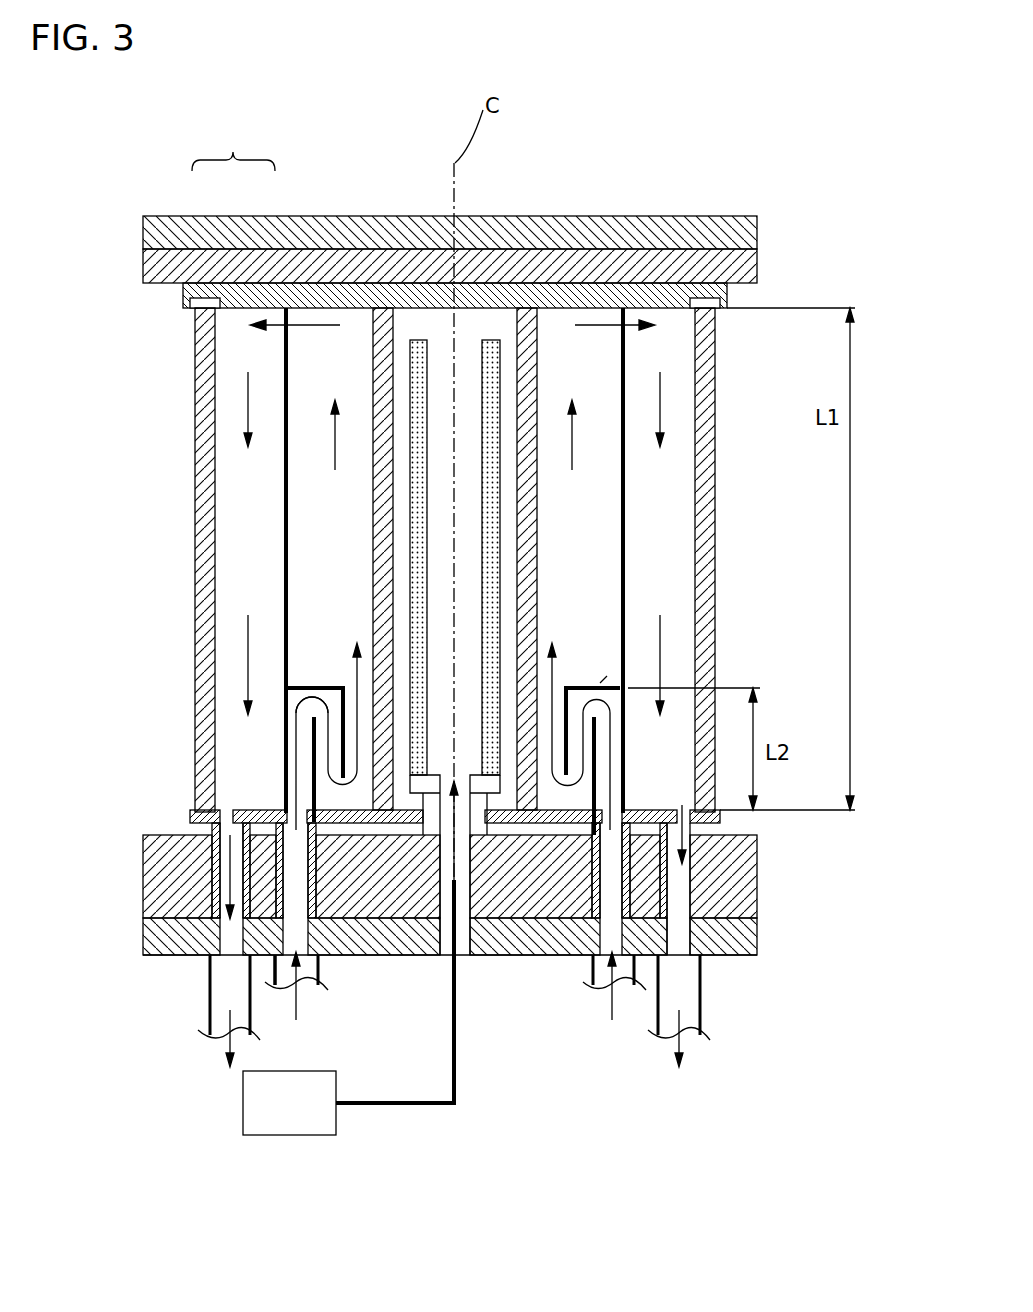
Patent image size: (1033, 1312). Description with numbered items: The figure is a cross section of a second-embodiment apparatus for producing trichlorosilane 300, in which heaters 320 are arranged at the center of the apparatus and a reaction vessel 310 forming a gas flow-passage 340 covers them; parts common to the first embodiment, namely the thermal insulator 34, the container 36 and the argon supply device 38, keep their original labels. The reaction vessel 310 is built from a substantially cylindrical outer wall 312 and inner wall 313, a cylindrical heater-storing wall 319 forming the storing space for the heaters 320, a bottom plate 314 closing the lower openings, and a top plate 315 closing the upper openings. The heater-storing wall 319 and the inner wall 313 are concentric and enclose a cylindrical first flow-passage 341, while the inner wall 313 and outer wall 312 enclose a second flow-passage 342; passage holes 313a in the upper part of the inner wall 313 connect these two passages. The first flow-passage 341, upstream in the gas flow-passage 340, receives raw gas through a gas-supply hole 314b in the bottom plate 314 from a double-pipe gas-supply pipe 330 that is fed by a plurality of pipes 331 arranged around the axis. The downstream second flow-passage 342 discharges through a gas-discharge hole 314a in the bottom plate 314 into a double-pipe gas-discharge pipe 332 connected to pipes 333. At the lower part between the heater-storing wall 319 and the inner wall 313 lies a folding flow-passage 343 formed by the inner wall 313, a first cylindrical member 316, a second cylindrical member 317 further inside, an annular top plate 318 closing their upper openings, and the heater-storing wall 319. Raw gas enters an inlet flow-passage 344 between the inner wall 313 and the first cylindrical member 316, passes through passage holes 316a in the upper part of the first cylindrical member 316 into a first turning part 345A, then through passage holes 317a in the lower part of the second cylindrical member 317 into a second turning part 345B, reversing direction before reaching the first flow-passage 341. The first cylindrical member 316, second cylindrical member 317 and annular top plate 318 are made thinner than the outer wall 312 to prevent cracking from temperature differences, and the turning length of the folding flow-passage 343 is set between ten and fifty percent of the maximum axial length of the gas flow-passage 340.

The apparatus for producing trichlorosilane 300 is at (656, 1075).
The reaction vessel 310 is at (185, 605).
The outer wall 312 is at (210, 485).
The inner wall 313 is at (285, 402).
The passage holes 313a is at (285, 330).
The bottom plate 314 is at (193, 813).
The gas-discharge hole 314a is at (215, 855).
The gas-supply hole 314b is at (420, 918).
The top plate 315 is at (185, 290).
The first cylindrical member 316 is at (330, 745).
The passage holes 316a is at (312, 703).
The second cylindrical member 317 is at (312, 735).
The passage holes 317a is at (340, 792).
The annular top plate 318 is at (323, 688).
The heater-storing wall 319 is at (430, 340).
The heaters 320 is at (426, 340).
The gas-supply pipe 330 is at (355, 912).
The pipes 331 is at (302, 990).
The gas-discharge pipe 332 is at (210, 875).
The pipes 333 is at (210, 1010).
The gas flow-passage 340 is at (233, 149).
The first flow-passage 341 is at (352, 330).
The second flow-passage 342 is at (243, 320).
The folding flow-passage 343 is at (600, 685).
The inlet flow-passage 344 is at (622, 780).
The first turning part 345A is at (583, 800).
The second turning part 345B is at (595, 792).
The thermal insulator 34 is at (662, 262).
The container 36 is at (612, 216).
The argon supply device 38 is at (316, 1115).